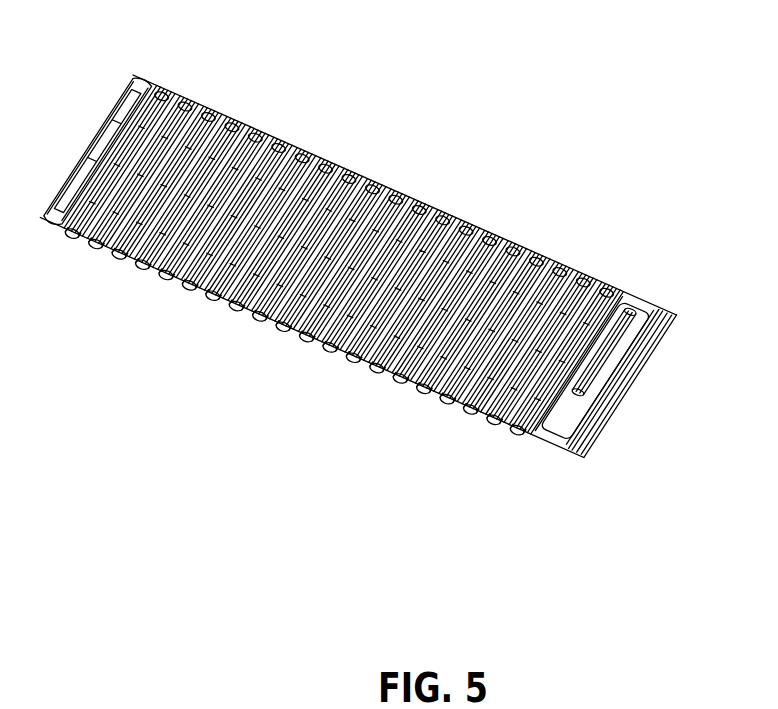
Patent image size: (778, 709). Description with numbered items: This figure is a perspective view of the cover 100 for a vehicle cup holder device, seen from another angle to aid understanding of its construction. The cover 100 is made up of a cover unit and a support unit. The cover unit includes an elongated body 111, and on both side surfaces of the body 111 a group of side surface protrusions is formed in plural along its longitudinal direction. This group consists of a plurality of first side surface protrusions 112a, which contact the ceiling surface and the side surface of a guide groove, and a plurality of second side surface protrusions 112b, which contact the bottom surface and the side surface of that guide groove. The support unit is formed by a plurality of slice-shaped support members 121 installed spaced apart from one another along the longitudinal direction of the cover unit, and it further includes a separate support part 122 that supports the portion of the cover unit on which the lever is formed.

The cover 100 is at (385, 248).
The body 111 is at (281, 137).
The first side surface protrusions 112a is at (173, 277).
The second side surface protrusions 112b is at (242, 307).
The support members 121 is at (417, 200).
The support part 122 is at (630, 391).